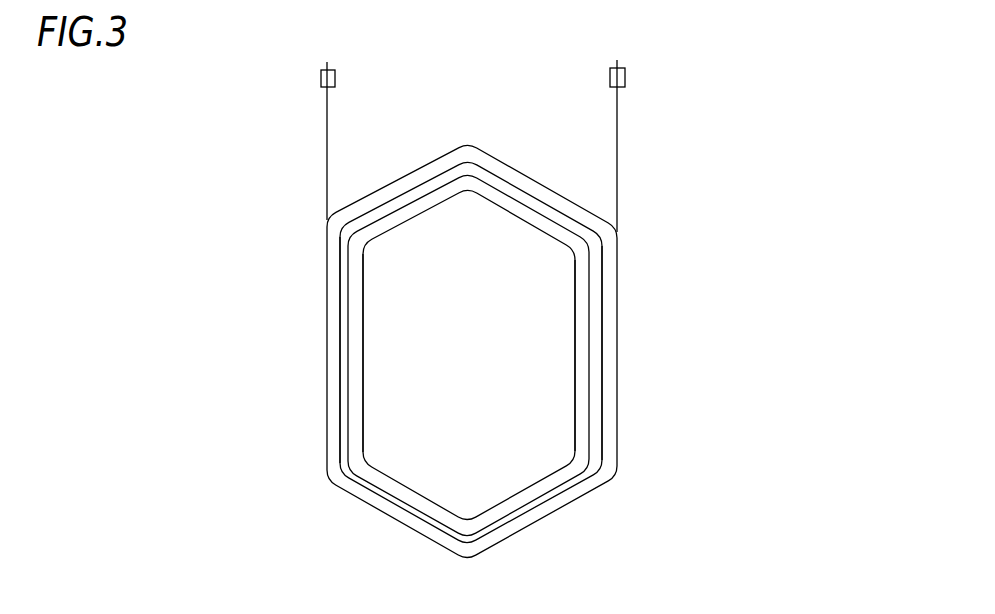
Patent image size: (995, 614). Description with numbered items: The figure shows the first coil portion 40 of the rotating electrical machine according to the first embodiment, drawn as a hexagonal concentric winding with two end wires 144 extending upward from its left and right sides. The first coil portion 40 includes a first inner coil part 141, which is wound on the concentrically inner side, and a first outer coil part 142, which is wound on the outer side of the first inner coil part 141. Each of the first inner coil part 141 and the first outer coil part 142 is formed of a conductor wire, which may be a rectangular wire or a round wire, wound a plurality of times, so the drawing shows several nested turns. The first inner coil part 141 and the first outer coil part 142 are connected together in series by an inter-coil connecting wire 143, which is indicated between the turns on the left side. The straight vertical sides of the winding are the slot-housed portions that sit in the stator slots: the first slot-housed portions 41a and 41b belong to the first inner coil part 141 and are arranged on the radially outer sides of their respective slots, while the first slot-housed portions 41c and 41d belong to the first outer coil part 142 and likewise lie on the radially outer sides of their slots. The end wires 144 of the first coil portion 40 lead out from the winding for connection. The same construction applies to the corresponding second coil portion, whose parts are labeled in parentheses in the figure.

The first coil portion 40 is at (512, 287).
The first slot-housed portion 41a is at (400, 397).
The first slot-housed portion 41b is at (578, 447).
The first slot-housed portion 41c is at (335, 437).
The first slot-housed portion 41d is at (650, 423).
The first inner coil part 141 is at (580, 370).
The first outer coil part 142 is at (613, 303).
The inter-coil connecting wire 143 is at (349, 252).
The end wires 144 is at (322, 77).